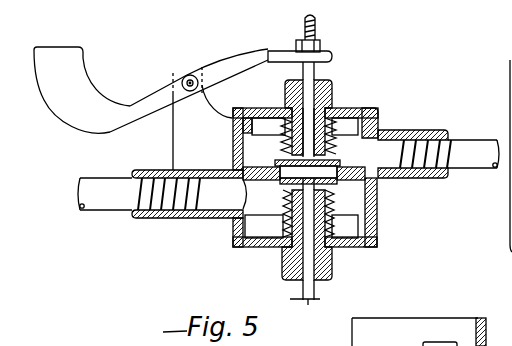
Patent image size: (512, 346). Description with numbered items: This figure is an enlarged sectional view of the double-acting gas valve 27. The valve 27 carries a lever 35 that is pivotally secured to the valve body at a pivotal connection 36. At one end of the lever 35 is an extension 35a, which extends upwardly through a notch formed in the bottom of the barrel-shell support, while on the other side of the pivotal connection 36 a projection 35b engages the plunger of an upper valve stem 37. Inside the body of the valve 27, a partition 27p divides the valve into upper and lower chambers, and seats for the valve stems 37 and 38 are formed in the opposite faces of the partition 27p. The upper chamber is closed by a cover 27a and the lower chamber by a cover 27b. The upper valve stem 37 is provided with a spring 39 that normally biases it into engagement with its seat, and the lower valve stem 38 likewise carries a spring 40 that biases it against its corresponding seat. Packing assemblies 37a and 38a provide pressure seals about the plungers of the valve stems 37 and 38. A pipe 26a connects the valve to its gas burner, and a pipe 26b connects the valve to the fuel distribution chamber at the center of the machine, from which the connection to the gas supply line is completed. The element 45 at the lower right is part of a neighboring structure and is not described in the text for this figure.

The pipe 26a is at (110, 202).
The pipe 26b is at (470, 147).
The valve 27 is at (376, 206).
The cover 27a is at (358, 113).
The cover 27b is at (358, 250).
The partition 27p is at (233, 151).
The lever 35 is at (167, 86).
The extension 35a is at (67, 55).
The projection 35b is at (333, 56).
The pivotal connection 36 is at (207, 66).
The valve stem 37 is at (318, 35).
The packing assembly 37a is at (333, 88).
The valve stem 38 is at (306, 290).
The packing assembly 38a is at (282, 259).
The spring 39 is at (334, 147).
The spring 40 is at (287, 192).
The adjacent element 45 is at (432, 342).